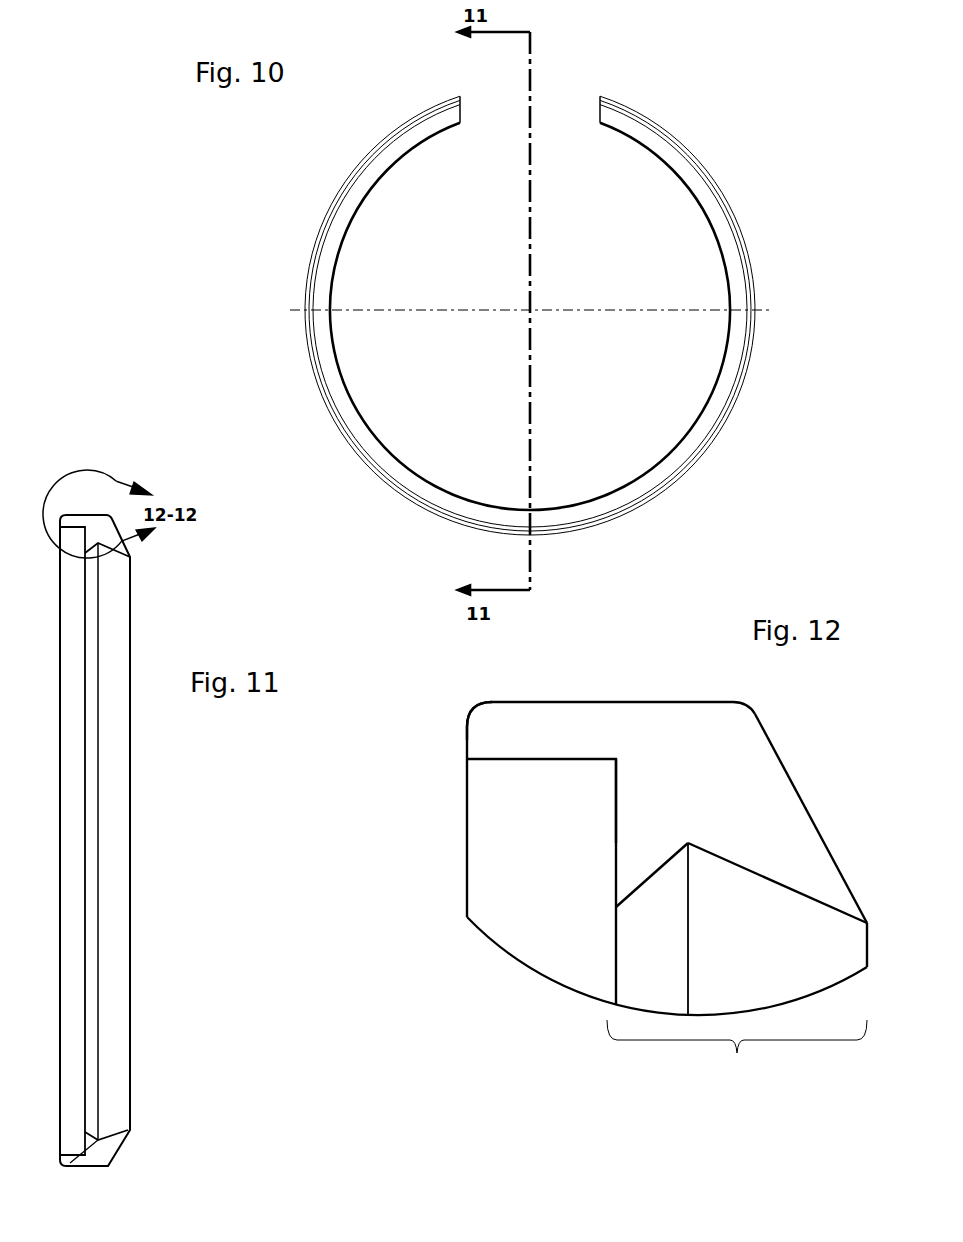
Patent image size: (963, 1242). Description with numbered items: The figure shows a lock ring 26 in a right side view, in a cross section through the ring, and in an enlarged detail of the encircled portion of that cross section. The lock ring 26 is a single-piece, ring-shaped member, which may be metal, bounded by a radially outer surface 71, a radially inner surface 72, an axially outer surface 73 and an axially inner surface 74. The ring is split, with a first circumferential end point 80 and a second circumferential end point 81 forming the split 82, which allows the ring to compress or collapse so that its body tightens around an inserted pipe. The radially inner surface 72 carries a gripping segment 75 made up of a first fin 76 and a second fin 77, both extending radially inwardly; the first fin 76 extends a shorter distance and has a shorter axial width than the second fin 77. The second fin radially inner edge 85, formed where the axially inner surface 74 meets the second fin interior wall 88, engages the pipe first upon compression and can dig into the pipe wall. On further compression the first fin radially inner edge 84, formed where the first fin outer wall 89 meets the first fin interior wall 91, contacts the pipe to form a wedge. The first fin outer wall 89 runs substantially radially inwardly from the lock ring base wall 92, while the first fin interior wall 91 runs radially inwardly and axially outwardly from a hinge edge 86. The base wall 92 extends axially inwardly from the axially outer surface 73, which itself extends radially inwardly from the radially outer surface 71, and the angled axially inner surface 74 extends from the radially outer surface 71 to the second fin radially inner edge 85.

In FIG. 10, the lock ring 26 is at (476, 283).
In FIG. 11, the lock ring 26 is at (146, 864).
In FIG. 10, the radially outer surface 71 is at (659, 105).
In FIG. 11, the radially outer surface 71 is at (105, 1177).
In FIG. 12, the radially outer surface 71 is at (675, 692).
In FIG. 10, the radially inner surface 72 is at (666, 180).
In FIG. 11, the radially inner surface 72 is at (116, 1061).
In FIG. 12, the radially inner surface 72 is at (625, 885).
In FIG. 10, the first circumferential end point 80 is at (467, 121).
In FIG. 10, the second circumferential end point 81 is at (594, 119).
In FIG. 10, the split 82 is at (572, 80).
In FIG. 12, the axially outer surface 73 is at (454, 750).
In FIG. 12, the axially inner surface 74 is at (780, 733).
In FIG. 12, the gripping segment 75 is at (667, 1005).
In FIG. 12, the first fin 76 is at (637, 841).
In FIG. 12, the second fin 77 is at (778, 832).
In FIG. 12, the first fin radially inner edge 84 is at (607, 993).
In FIG. 12, the second fin radially inner edge 85 is at (865, 923).
In FIG. 12, the hinge edge 86 is at (671, 927).
In FIG. 12, the second fin interior wall 88 is at (807, 911).
In FIG. 12, the first fin outer wall 89 is at (602, 868).
In FIG. 12, the first fin interior wall 91 is at (625, 921).
In FIG. 12, the lock ring base wall 92 is at (474, 871).